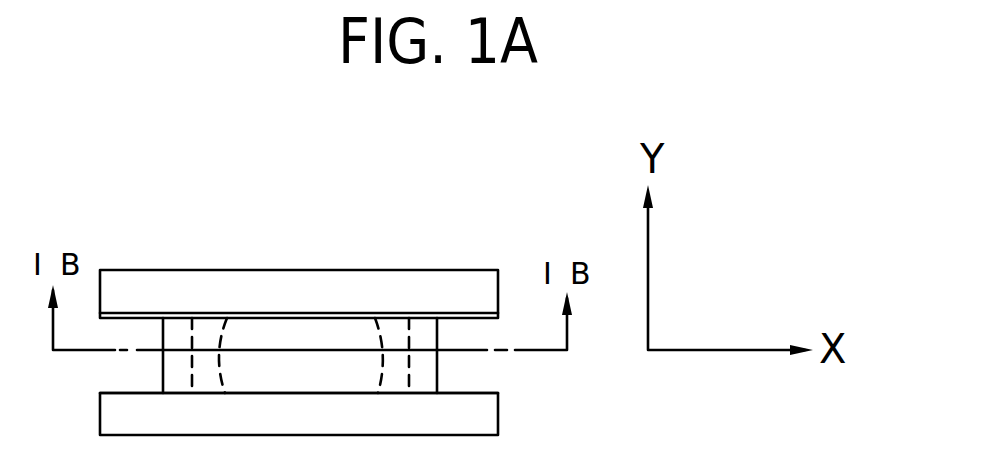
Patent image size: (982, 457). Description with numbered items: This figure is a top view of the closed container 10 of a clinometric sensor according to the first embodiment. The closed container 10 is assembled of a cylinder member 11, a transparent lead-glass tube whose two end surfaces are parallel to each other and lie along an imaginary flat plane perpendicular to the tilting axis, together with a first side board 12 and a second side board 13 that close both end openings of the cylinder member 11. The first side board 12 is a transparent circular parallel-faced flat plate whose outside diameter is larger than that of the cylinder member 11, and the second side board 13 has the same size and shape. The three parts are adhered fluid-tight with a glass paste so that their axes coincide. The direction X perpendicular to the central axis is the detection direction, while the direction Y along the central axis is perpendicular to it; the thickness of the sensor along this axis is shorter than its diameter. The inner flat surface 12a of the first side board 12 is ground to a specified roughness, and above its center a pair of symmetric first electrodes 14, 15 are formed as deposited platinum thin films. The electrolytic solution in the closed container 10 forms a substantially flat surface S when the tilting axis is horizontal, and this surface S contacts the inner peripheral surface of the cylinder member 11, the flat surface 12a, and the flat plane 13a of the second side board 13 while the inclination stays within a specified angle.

The closed container 10 is at (313, 301).
The cylinder member 11 is at (163, 377).
The first side board 12 is at (331, 277).
The flat surface 12a is at (337, 317).
The second side board 13 is at (368, 417).
The flat plane 13a is at (475, 391).
The first electrode 14 is at (183, 313).
The first electrode 15 is at (445, 313).
The surface S is at (256, 340).